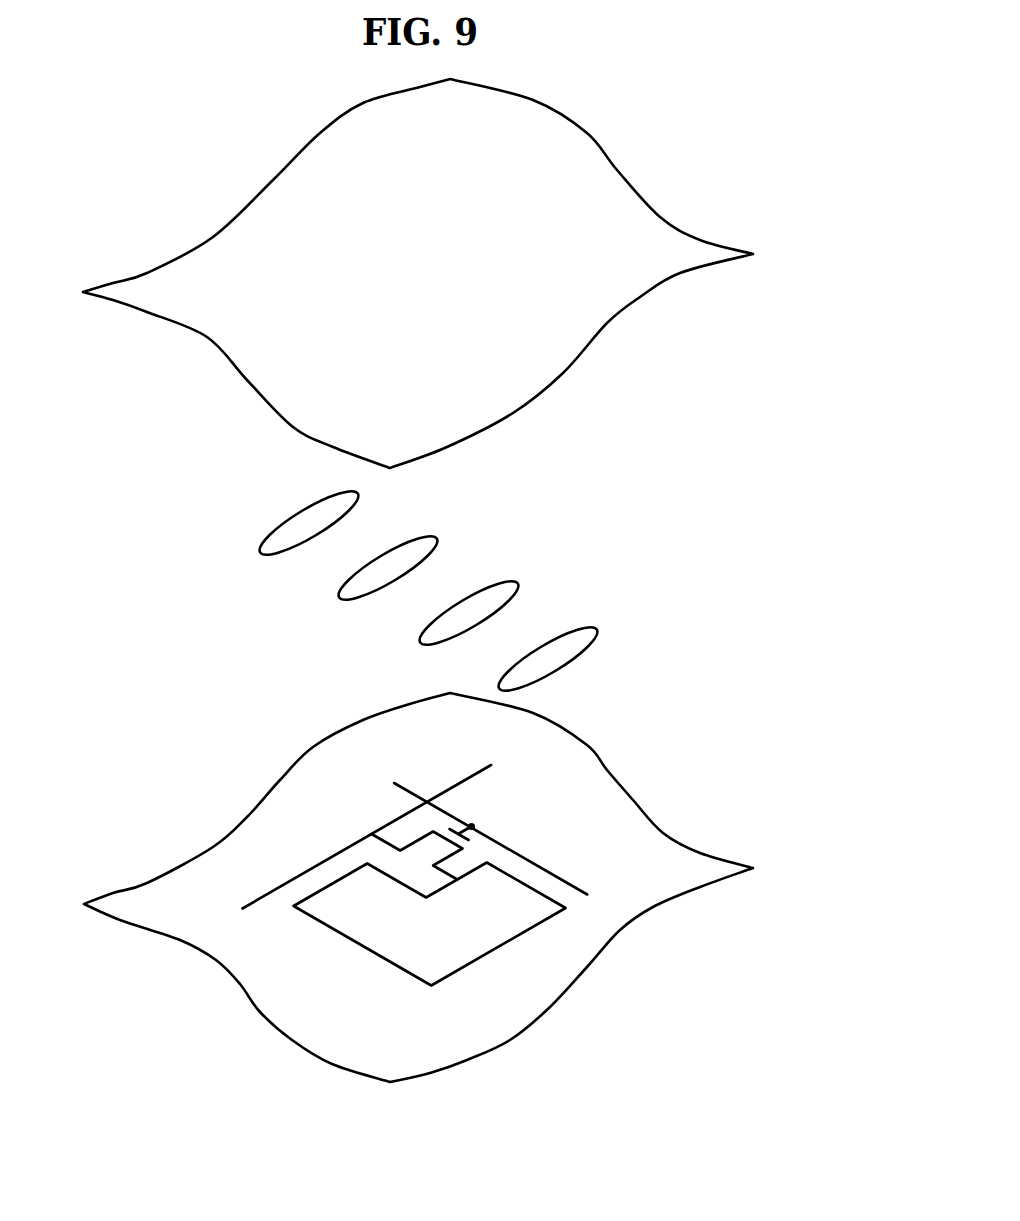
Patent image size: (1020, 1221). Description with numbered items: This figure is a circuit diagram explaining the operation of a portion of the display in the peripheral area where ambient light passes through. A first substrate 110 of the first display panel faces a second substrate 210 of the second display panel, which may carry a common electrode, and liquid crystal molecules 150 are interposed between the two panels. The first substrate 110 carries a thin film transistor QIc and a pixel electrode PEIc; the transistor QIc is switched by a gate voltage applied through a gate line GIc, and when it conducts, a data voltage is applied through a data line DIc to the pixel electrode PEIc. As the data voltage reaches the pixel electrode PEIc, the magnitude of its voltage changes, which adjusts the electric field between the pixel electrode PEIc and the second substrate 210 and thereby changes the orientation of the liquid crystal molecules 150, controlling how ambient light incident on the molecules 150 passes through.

The second substrate 210 is at (631, 149).
The liquid crystal molecules 150 is at (658, 717).
The first substrate 110 is at (618, 975).
The gate line GIc is at (475, 823).
The data line DIc is at (382, 826).
The thin film transistor QIc is at (423, 854).
The pixel electrode PEIc is at (463, 971).